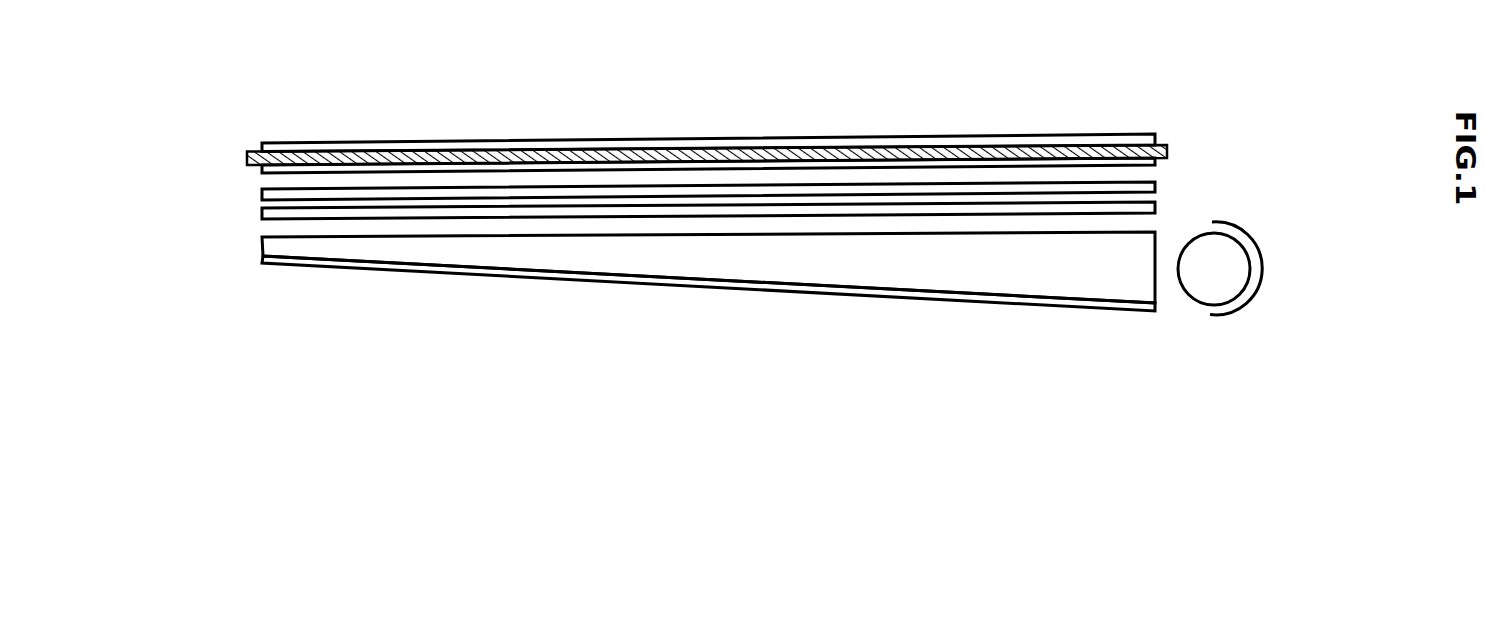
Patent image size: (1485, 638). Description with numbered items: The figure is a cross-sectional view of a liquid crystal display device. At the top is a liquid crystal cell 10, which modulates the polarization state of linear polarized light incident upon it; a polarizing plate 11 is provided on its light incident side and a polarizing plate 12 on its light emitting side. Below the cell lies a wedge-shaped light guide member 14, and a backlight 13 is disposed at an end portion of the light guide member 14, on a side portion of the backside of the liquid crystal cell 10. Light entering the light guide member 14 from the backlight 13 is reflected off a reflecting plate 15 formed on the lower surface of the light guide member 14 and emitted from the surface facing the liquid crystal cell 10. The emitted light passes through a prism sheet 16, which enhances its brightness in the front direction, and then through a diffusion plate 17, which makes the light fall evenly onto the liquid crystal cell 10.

The liquid crystal cell 10 is at (1170, 148).
The polarizing plate 11 is at (1157, 163).
The polarizing plate 12 is at (1163, 136).
The backlight 13 is at (1266, 298).
The light guide member 14 is at (1157, 285).
The reflecting plate 15 is at (1112, 312).
The prism sheet 16 is at (262, 213).
The diffusion plate 17 is at (262, 197).